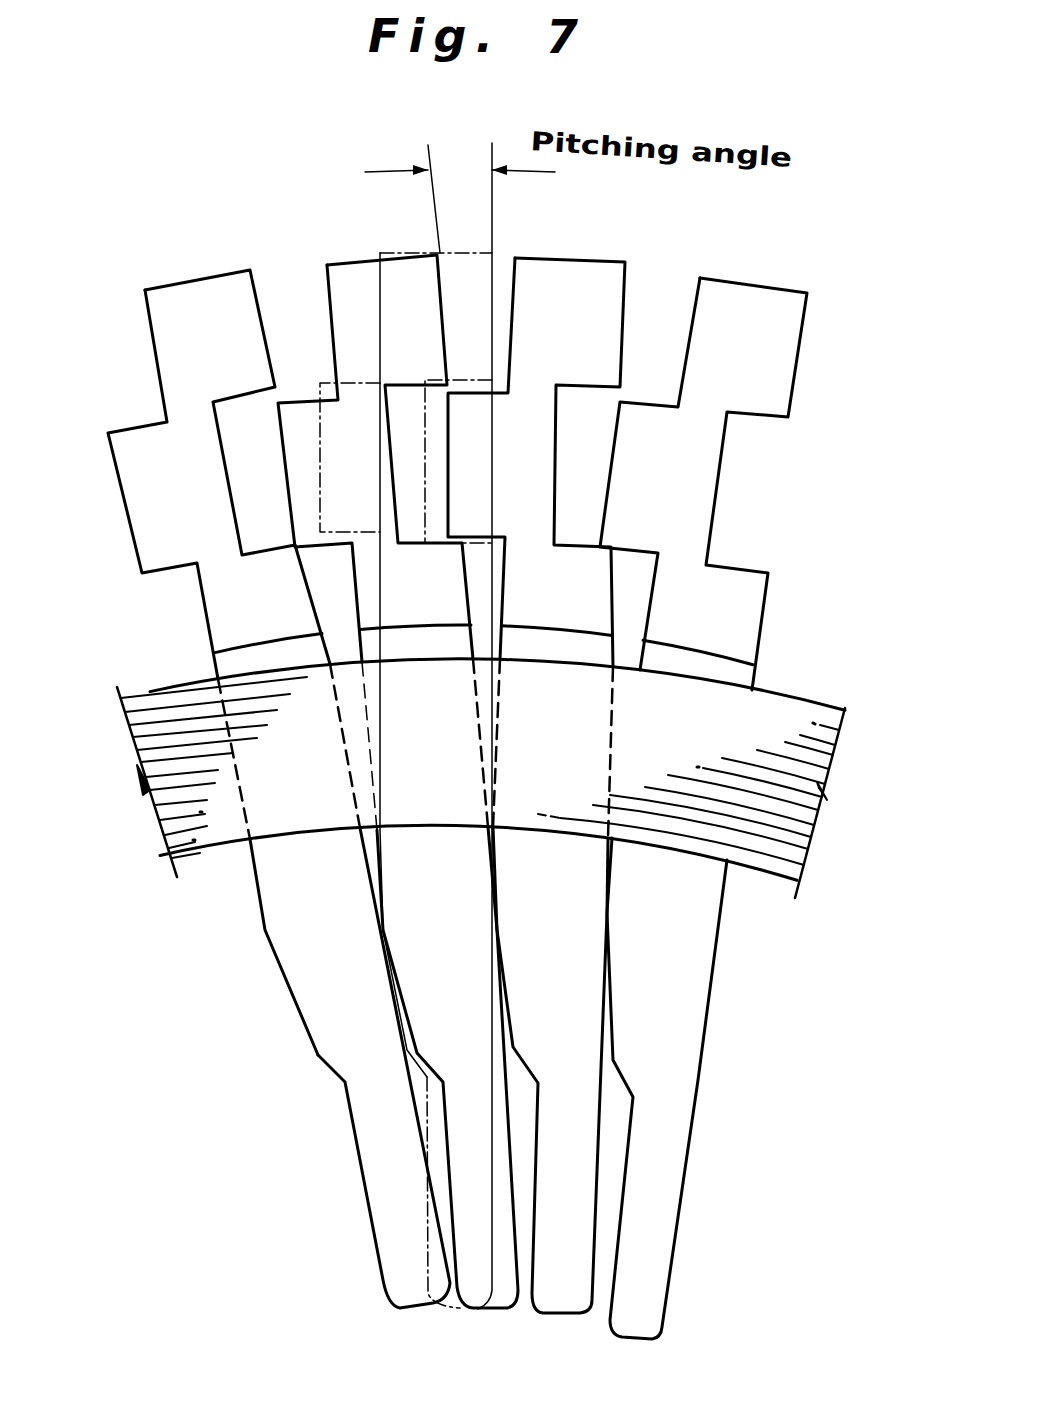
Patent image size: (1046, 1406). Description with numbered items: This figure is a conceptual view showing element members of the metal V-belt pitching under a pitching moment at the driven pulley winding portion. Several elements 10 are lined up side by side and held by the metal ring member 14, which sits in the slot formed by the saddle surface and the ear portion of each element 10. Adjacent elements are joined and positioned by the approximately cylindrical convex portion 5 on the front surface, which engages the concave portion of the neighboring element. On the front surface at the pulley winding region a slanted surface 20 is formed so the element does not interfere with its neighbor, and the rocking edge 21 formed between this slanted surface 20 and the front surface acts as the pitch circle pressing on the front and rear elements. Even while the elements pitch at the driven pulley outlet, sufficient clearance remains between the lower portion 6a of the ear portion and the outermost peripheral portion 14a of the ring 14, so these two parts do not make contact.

The convex portion 5 is at (142, 442).
The lower portion of the ear portion 6a is at (224, 656).
The element 10 is at (134, 262).
The metal ring member 14 is at (857, 722).
The outermost peripheral portion of the ring 14a is at (152, 690).
The slanted surface 20 is at (288, 989).
The rocking edge 21 is at (252, 938).